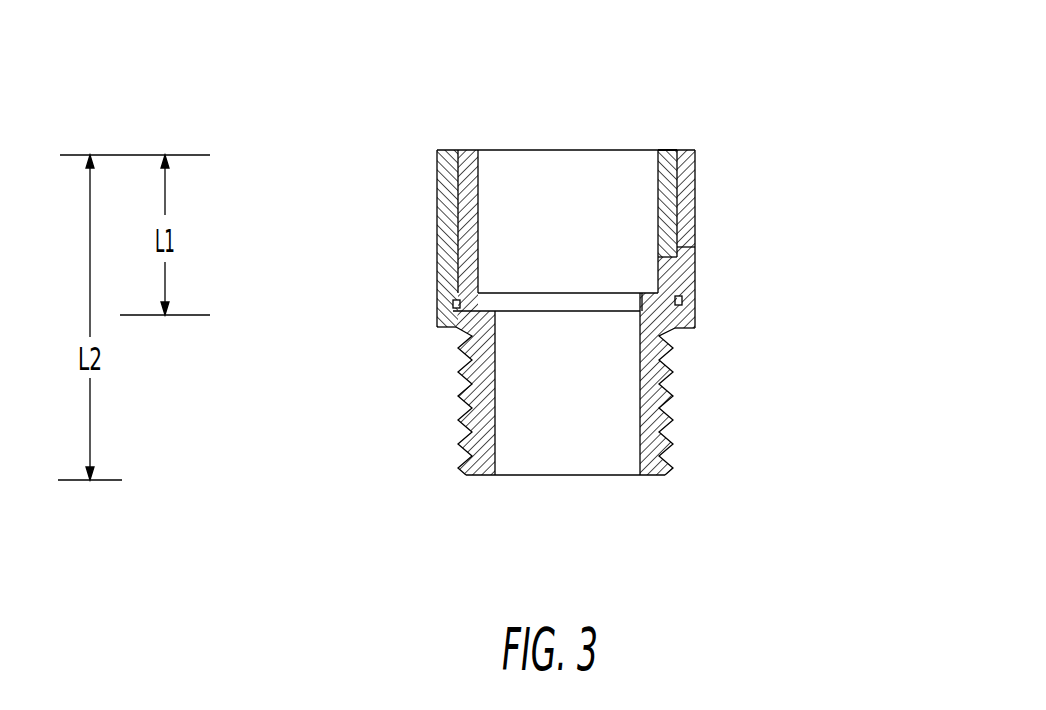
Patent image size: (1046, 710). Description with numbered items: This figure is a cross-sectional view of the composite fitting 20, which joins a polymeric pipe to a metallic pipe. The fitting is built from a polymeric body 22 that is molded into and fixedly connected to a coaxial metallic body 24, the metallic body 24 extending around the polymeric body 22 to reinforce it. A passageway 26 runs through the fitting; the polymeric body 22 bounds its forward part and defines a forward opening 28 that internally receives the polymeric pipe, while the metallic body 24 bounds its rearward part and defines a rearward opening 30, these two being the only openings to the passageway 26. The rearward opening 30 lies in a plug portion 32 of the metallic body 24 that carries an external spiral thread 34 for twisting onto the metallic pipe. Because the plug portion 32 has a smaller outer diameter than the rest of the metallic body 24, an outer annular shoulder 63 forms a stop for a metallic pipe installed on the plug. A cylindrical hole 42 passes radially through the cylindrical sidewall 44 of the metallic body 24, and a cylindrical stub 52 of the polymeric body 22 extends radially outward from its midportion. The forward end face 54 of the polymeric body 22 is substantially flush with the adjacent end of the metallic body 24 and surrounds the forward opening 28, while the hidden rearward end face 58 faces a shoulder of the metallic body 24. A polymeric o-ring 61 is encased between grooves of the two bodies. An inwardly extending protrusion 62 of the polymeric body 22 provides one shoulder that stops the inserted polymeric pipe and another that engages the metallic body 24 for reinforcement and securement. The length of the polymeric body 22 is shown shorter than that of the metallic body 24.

The composite fitting 20 is at (780, 106).
The polymeric body 22 is at (652, 198).
The metallic body 24 is at (705, 336).
The passageway 26 is at (566, 420).
The forward opening 28 is at (545, 138).
The rearward opening 30 is at (516, 475).
The plug portion 32 is at (448, 396).
The external spiral thread 34 is at (665, 442).
The cylindrical hole 42 is at (695, 235).
The cylindrical sidewall 44 is at (695, 185).
The stub 52 is at (695, 247).
The forward end face 54 is at (671, 150).
The rearward end face 58 is at (642, 318).
The polymeric o-ring 61 is at (695, 300).
The inwardly extending protrusion 62 is at (490, 311).
The annular shoulder 63 is at (446, 332).